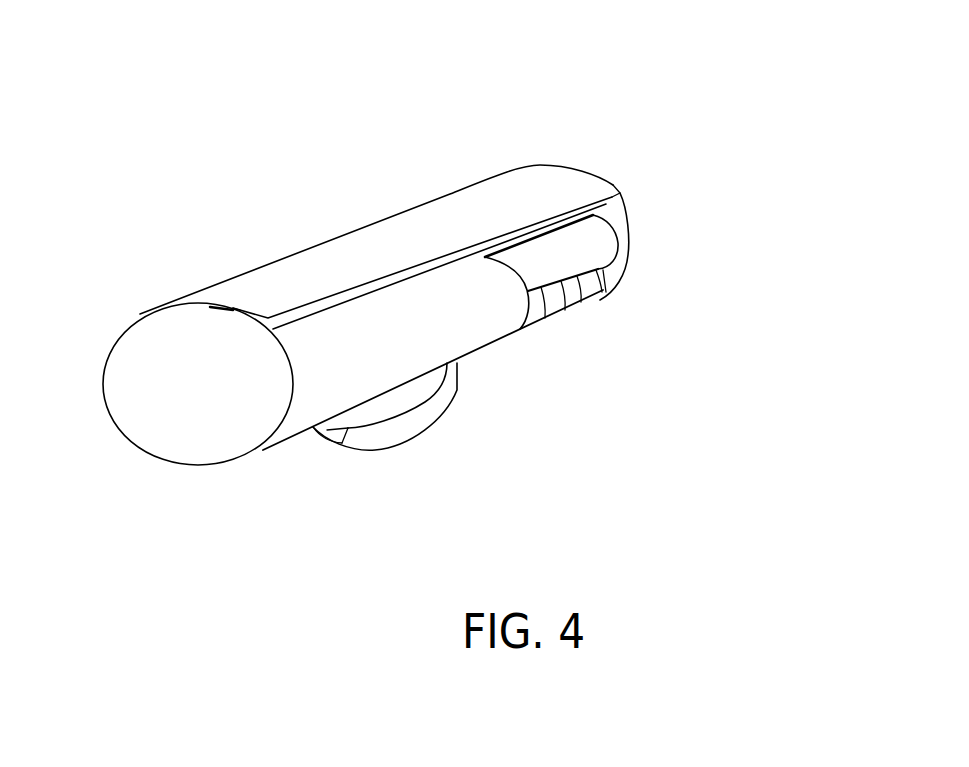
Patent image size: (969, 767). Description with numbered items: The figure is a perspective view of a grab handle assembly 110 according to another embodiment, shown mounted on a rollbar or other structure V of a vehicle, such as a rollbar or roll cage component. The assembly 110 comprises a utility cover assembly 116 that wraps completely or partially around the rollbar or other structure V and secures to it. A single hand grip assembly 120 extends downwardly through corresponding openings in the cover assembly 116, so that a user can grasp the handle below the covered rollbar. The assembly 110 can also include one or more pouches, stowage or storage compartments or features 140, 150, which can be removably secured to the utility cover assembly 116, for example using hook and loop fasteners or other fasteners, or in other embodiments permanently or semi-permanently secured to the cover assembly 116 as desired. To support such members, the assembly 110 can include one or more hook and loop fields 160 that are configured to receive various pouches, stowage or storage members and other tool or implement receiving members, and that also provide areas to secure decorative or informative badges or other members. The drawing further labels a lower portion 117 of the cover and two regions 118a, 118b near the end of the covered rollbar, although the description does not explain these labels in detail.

The assembly 110 is at (323, 129).
The utility cover assembly 116 is at (556, 188).
The bottom surface of shaft 117 is at (462, 366).
The flat portion 118a is at (225, 305).
The flat portion 118b is at (225, 305).
The hand grip assembly 120 is at (427, 415).
The pouch or stowage feature 140 is at (600, 250).
The pouch or stowage feature 150 is at (603, 291).
The hook and loop field 160 is at (487, 317).
The rollbar or other structure V is at (188, 447).